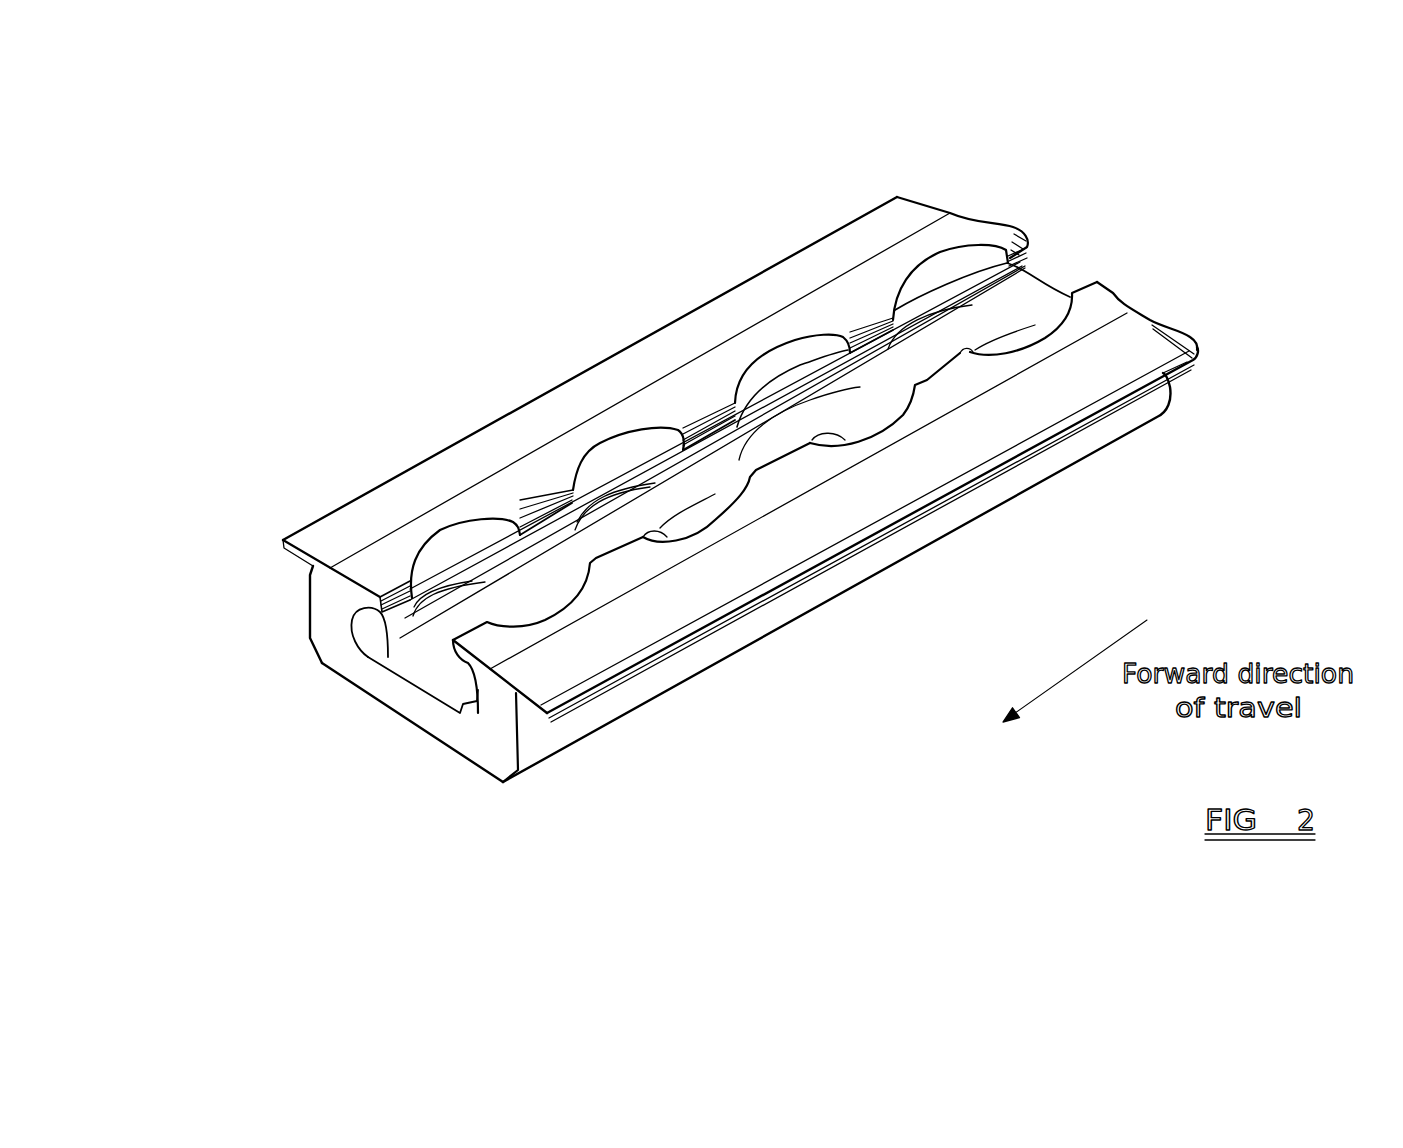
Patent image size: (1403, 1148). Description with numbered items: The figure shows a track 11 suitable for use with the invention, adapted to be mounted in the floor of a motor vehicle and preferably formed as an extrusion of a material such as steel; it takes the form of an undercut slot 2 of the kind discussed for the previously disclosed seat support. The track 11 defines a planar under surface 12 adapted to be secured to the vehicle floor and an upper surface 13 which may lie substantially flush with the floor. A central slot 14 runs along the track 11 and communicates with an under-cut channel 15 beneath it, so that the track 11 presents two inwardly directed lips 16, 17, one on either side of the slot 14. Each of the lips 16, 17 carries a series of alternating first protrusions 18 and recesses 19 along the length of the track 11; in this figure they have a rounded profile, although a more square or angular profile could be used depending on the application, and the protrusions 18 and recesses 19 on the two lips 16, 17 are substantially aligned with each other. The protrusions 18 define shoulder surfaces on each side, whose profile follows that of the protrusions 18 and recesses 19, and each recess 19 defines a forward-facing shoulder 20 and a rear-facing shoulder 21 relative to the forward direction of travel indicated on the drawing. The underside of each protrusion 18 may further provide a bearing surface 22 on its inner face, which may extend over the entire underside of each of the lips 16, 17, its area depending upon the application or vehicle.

The track 11 is at (478, 312).
The planar under surface 12 is at (430, 738).
The upper surface 13 is at (780, 540).
The central slot 14 is at (545, 536).
The under-cut channel 15 is at (428, 667).
The inwardly directed lip 16 is at (372, 562).
The inwardly directed lip 17 is at (517, 707).
The first protrusion 18 is at (713, 410).
The recess 19 is at (787, 352).
The forward-facing shoulder 20 is at (847, 335).
The rear-facing shoulder 21 is at (810, 392).
The bearing surface 22 is at (310, 634).
The undercut slot 2 is at (507, 733).